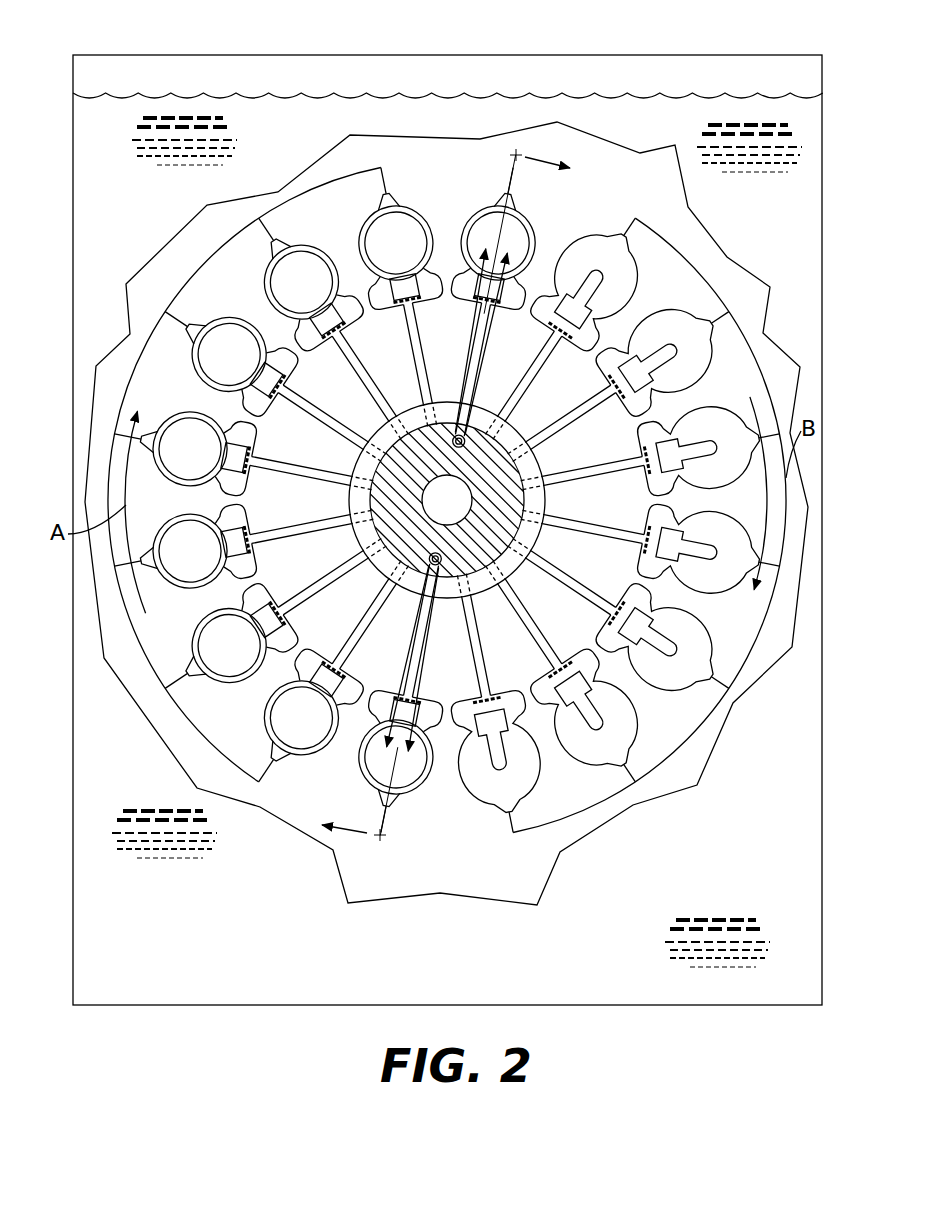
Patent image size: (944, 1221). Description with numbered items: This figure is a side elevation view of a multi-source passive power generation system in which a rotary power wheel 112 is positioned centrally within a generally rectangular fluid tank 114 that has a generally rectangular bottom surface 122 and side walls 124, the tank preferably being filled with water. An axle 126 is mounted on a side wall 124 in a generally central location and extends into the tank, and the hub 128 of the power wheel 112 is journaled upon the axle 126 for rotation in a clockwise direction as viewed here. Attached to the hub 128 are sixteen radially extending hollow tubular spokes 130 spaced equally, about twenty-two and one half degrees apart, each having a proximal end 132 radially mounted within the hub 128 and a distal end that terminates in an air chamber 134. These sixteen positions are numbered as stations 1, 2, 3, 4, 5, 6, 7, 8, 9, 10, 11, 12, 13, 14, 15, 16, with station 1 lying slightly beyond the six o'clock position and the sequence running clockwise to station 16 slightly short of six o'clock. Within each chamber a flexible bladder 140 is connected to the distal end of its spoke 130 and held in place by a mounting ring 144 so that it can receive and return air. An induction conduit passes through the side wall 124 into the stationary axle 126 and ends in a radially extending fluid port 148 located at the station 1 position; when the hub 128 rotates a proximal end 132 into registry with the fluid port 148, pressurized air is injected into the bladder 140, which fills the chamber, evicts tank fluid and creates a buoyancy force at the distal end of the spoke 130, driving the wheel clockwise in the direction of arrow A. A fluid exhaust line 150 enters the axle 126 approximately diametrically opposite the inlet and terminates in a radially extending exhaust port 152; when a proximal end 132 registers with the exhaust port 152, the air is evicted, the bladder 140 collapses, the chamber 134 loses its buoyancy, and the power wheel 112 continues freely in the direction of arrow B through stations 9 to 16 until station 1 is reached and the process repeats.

The fluid tank 114 is at (822, 118).
The power wheel 112 is at (668, 800).
The bottom surface 122 is at (304, 979).
The side walls 124 is at (73, 907).
The axle 126 is at (421, 405).
The hub 128 is at (541, 546).
The tubular spokes 130 is at (342, 444).
The proximal end 132 is at (345, 548).
The air chamber 134 is at (200, 327).
The flexible bladder 140 is at (624, 300).
The mounting ring 144 is at (436, 567).
The fluid port 148 is at (421, 614).
The fluid exhaust line 150 is at (495, 432).
The exhaust port 152 is at (462, 435).
The station 1 is at (406, 820).
The station 2 is at (319, 778).
The station 3 is at (236, 721).
The station 4 is at (170, 631).
The station 5 is at (141, 512).
The station 6 is at (161, 394).
The station 7 is at (242, 301).
The station 8 is at (349, 215).
The station 9 is at (540, 228).
The station 10 is at (634, 270).
The station 11 is at (706, 384).
The station 12 is at (715, 511).
The station 13 is at (705, 616).
The station 14 is at (669, 712).
The station 15 is at (571, 785).
The station 16 is at (460, 820).